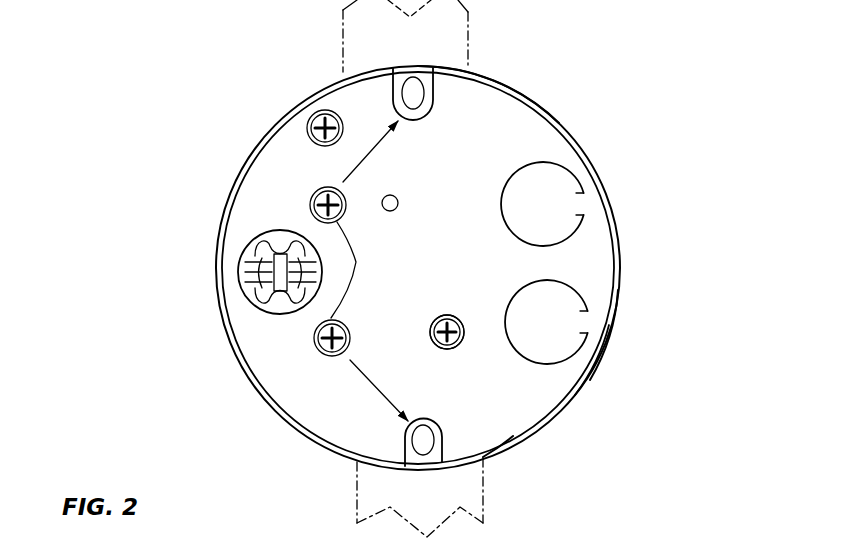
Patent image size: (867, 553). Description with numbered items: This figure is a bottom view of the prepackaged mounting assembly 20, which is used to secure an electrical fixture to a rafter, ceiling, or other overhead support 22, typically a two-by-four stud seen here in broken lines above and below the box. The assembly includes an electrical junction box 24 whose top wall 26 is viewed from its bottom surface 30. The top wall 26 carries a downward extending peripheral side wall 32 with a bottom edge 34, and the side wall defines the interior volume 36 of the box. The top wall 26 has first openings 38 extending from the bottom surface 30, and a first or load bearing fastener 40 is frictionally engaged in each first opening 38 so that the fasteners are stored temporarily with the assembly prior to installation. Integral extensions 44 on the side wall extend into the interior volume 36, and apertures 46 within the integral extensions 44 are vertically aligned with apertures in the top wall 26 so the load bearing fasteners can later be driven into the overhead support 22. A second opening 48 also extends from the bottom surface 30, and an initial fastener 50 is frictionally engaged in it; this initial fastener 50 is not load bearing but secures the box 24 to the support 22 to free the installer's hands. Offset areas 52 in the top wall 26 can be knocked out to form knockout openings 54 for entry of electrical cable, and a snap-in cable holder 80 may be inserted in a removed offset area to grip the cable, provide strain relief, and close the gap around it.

The prepackaged mounting assembly 20 is at (611, 71).
The overhead support 22 is at (353, 32).
The electrical junction box 24 is at (518, 88).
The top wall 26 is at (595, 252).
The bottom surface 30 is at (447, 172).
The peripheral side wall 32 is at (573, 137).
The bottom edge 34 is at (607, 350).
The interior volume 36 is at (521, 400).
The first opening 38 is at (312, 192).
The first or load bearing fastener 40 is at (369, 271).
The integral extensions 44 is at (433, 108).
The apertures 46 is at (405, 96).
The second opening 48 is at (441, 313).
The initial fastener 50 is at (431, 349).
The offset areas 52 is at (558, 217).
The knockout openings 54 is at (252, 240).
The snap-in cable holder 80 is at (233, 324).